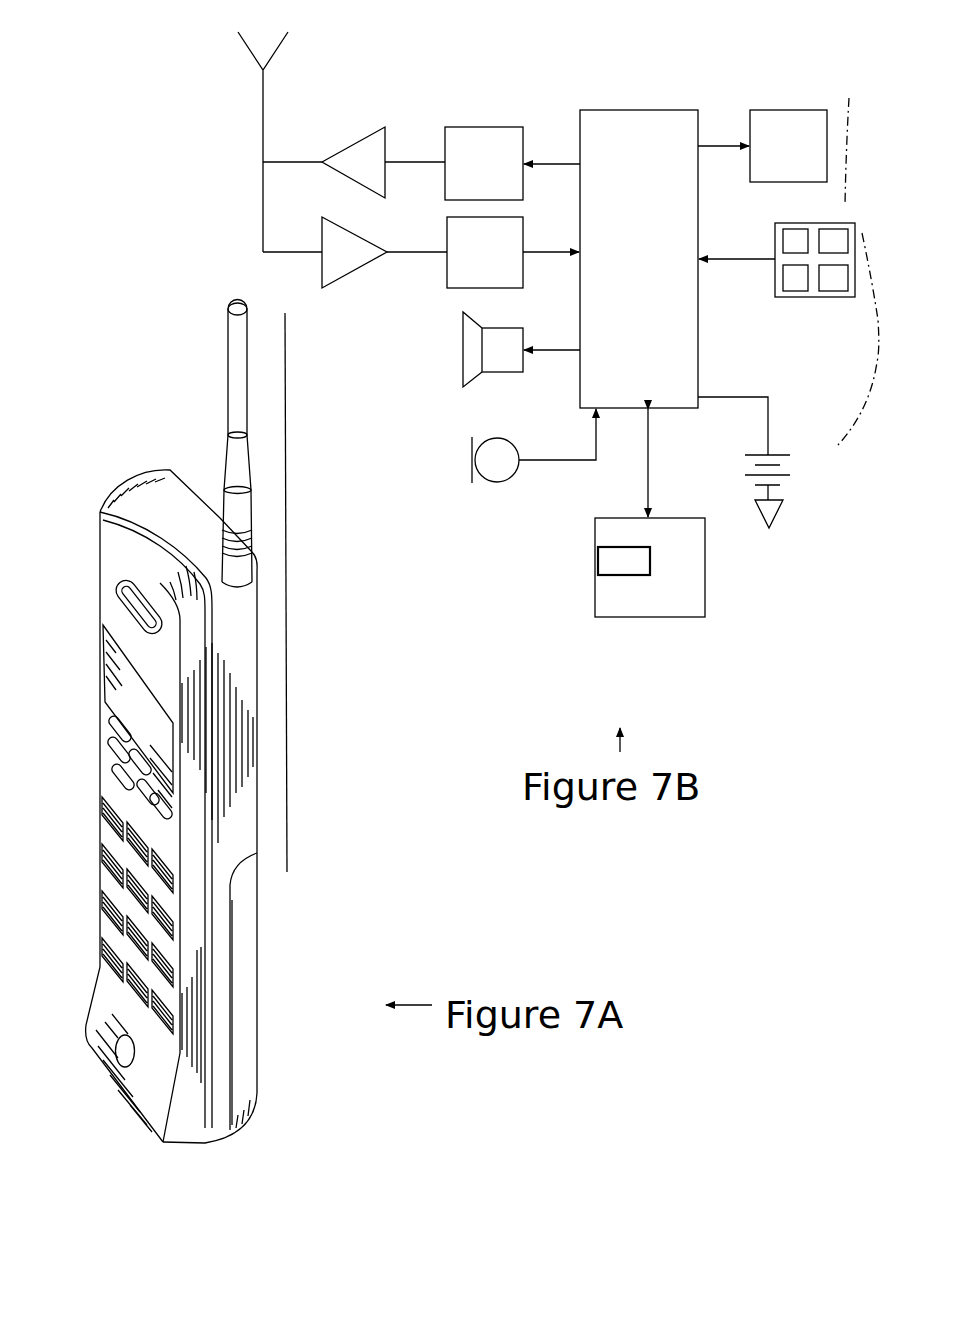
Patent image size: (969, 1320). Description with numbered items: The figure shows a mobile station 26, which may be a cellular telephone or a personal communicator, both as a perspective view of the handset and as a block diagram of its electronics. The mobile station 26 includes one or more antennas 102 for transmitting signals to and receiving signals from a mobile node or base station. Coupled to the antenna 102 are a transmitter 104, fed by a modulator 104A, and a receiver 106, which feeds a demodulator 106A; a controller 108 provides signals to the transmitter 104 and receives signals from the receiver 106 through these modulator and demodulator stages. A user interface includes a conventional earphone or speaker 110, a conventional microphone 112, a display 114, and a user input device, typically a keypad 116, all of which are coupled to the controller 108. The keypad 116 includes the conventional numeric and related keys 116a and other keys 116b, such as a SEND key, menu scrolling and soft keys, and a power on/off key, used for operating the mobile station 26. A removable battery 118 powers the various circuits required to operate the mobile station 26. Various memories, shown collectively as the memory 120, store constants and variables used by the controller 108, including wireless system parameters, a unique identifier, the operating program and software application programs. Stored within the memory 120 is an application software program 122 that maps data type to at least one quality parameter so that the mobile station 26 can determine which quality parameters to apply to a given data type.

In FIG. 7B, the mobile station 26 is at (486, 629).
In FIG. 7A, the mobile station 26 is at (105, 466).
In FIG. 7B, the antenna 102 is at (236, 54).
In FIG. 7A, the antenna 102 is at (238, 391).
In FIG. 7B, the transmitter 104 is at (345, 172).
In FIG. 7B, the modulator 104A is at (466, 127).
In FIG. 7B, the receiver 106 is at (325, 268).
In FIG. 7B, the demodulator 106A is at (447, 228).
In FIG. 7B, the controller 108 is at (580, 134).
In FIG. 7B, the speaker 110 is at (500, 325).
In FIG. 7A, the speaker 110 is at (130, 595).
In FIG. 7B, the microphone 112 is at (519, 480).
In FIG. 7A, the microphone 112 is at (120, 1056).
In FIG. 7B, the display 114 is at (827, 138).
In FIG. 7A, the display 114 is at (120, 690).
In FIG. 7B, the keypad 116 is at (813, 260).
In FIG. 7A, the keypad 116 is at (175, 874).
In FIG. 7B, the numeric and related keys 116a is at (812, 233).
In FIG. 7A, the numeric and related keys 116a is at (102, 905).
In FIG. 7B, the other keys 116b is at (813, 276).
In FIG. 7A, the other keys 116b is at (110, 777).
In FIG. 7B, the removable battery 118 is at (792, 465).
In FIG. 7A, the removable battery 118 is at (240, 1015).
In FIG. 7B, the memory 120 is at (648, 529).
In FIG. 7B, the application software program 122 is at (595, 560).